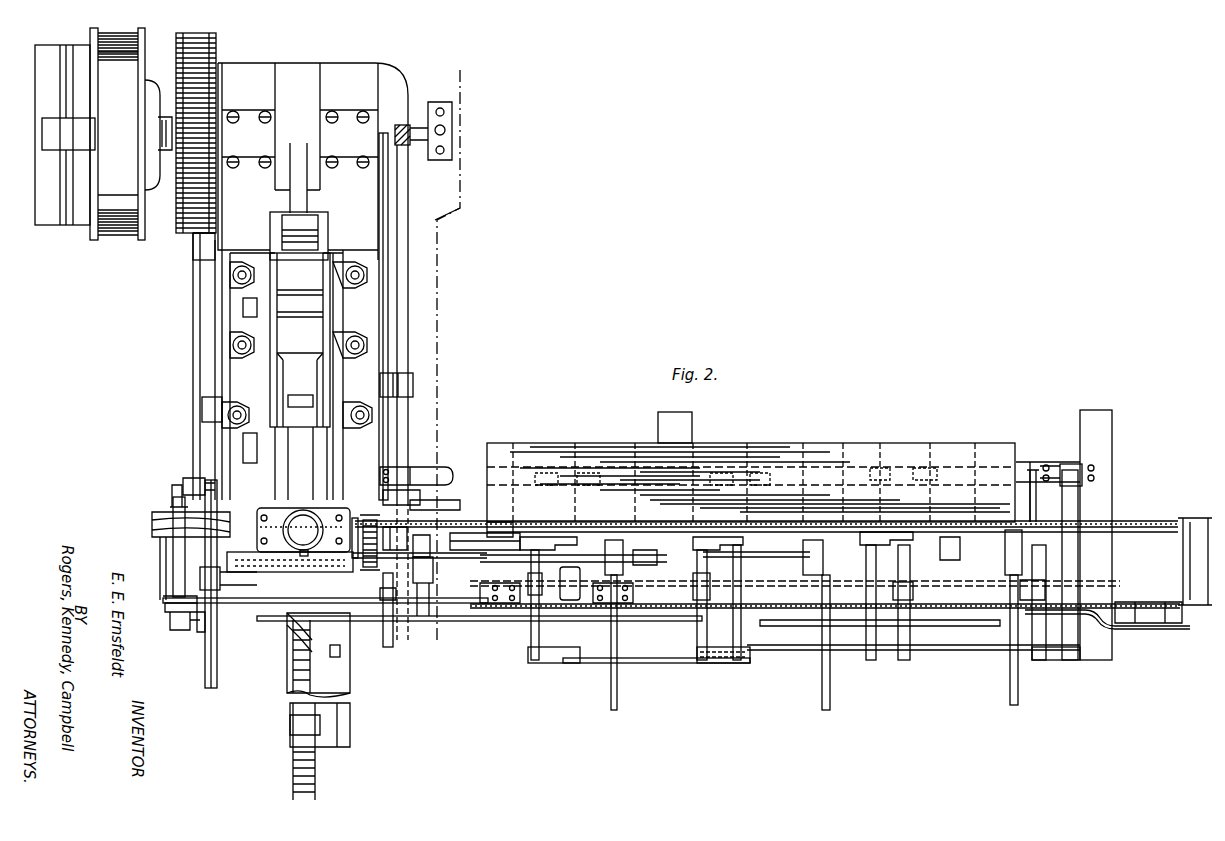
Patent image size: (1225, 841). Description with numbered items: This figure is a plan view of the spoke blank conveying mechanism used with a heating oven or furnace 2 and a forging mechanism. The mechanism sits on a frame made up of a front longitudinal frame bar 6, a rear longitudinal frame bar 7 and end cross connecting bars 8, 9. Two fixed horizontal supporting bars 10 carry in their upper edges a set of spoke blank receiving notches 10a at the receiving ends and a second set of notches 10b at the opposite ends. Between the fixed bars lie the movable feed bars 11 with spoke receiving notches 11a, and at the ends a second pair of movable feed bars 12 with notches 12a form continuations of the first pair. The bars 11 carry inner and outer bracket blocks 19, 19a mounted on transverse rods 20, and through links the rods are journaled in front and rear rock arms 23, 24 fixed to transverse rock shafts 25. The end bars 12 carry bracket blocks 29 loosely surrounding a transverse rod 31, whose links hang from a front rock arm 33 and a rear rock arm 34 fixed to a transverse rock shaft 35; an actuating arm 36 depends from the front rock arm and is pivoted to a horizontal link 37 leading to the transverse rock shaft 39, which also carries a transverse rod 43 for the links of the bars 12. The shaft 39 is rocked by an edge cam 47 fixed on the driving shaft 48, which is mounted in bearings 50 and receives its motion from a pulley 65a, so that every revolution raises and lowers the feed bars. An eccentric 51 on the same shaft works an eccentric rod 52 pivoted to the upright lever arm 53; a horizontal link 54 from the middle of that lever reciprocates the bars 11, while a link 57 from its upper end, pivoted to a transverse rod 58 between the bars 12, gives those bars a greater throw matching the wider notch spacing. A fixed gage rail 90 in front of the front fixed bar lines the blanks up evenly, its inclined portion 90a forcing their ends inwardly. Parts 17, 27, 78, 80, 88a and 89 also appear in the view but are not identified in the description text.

The heating oven or furnace 2 is at (751, 467).
The front longitudinal frame bar 6 is at (960, 600).
The rear longitudinal frame bar 7 is at (1030, 466).
The end cross connecting bar 8 is at (998, 547).
The end cross connecting bar 9 is at (440, 571).
The fixed supporting bar 10 is at (1128, 555).
The spoke blank receiving notches 10a is at (943, 572).
The spoke blank receiving notches 10b is at (497, 620).
The movable feed bar 11 is at (1092, 580).
The spoke receiving notches 11a is at (945, 600).
The movable feed bar 12 is at (432, 500).
The spoke blank receiving notches 12a is at (355, 518).
The cylinder 17 is at (1005, 563).
The inner bracket block 19 is at (535, 538).
The outer bracket block 19a is at (533, 605).
The transverse rod 20 is at (700, 570).
The front rock arm 23 is at (552, 663).
The rear rock arm 24 is at (735, 522).
The transverse rock shaft 25 is at (710, 580).
The bar 27 is at (600, 663).
The bracket block 29 is at (172, 500).
The transverse rod 31 is at (166, 556).
The front rock arm 33 is at (190, 635).
The rear rock arm 34 is at (192, 480).
The transverse rock shaft 35 is at (218, 640).
The actuating arm 36 is at (220, 573).
The horizontal link 37 is at (262, 599).
The transverse rock shaft 39 is at (433, 586).
The transverse rod 43 is at (392, 619).
The edge cam 47 is at (405, 488).
The driving shaft 48 is at (410, 340).
The bearing 50 is at (413, 385).
The eccentric 51 is at (389, 537).
The eccentric rod 52 is at (455, 507).
The lever arm 53 is at (501, 518).
The horizontal link 54 is at (556, 583).
The link 57 is at (485, 537).
The transverse rod 58 is at (308, 552).
The pulley 65a is at (103, 134).
The bearing housing 78 is at (265, 531).
The bolts 80 is at (262, 544).
The screw 88a is at (280, 768).
The clamp 89 is at (312, 645).
The gage rail 90 is at (797, 610).
The inclined portion 90a is at (1105, 626).